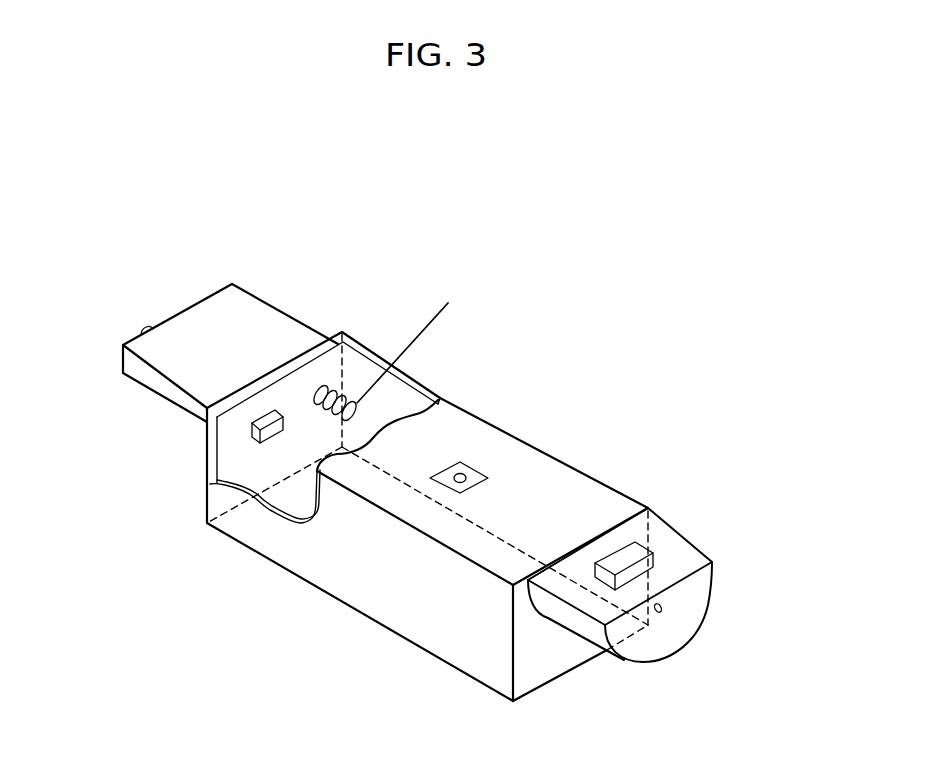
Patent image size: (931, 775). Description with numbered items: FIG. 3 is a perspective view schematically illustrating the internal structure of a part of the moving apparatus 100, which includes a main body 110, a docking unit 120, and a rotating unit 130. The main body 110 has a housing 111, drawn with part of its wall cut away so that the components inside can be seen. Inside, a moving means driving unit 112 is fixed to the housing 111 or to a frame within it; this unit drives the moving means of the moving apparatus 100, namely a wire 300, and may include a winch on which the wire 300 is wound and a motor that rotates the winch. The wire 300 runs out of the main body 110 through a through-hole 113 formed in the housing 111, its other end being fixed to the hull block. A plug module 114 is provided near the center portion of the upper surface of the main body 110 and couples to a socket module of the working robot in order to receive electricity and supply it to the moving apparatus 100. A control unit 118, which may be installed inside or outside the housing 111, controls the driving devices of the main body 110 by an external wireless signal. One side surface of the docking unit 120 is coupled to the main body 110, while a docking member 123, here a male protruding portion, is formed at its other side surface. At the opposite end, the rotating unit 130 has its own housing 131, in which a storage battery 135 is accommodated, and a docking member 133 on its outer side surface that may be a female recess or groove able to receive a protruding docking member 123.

The moving apparatus 100 is at (419, 178).
The main body 110 is at (592, 466).
The housing 111 is at (206, 444).
The moving means driving unit 112 is at (317, 390).
The through-hole 113 is at (370, 386).
The plug module 114 is at (472, 470).
The control unit 118 is at (263, 417).
The docking unit 120 is at (282, 302).
The docking member 123 is at (143, 325).
The rotating unit 130 is at (678, 526).
The housing 131 is at (695, 548).
The docking member 133 is at (662, 612).
The storage battery 135 is at (653, 562).
The wire 300 is at (437, 318).